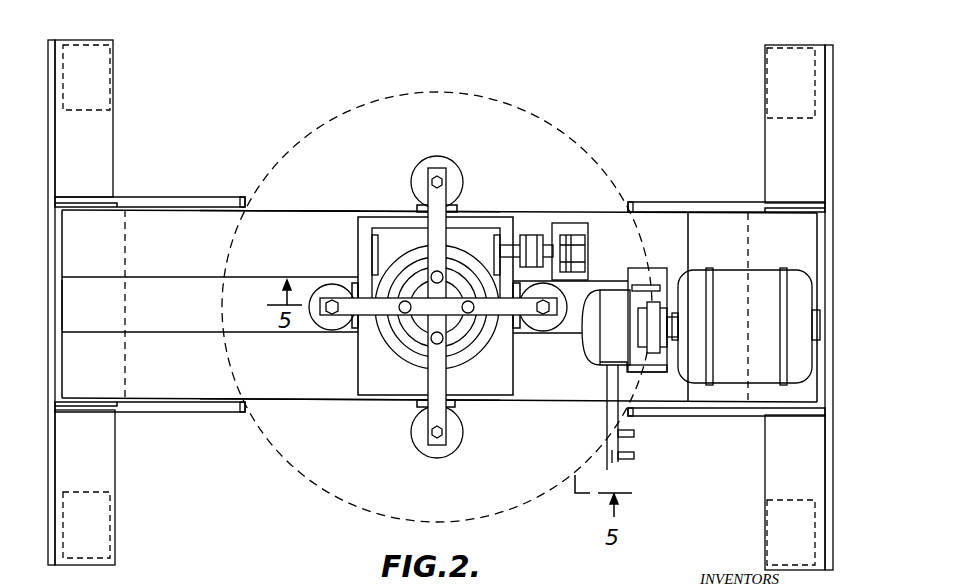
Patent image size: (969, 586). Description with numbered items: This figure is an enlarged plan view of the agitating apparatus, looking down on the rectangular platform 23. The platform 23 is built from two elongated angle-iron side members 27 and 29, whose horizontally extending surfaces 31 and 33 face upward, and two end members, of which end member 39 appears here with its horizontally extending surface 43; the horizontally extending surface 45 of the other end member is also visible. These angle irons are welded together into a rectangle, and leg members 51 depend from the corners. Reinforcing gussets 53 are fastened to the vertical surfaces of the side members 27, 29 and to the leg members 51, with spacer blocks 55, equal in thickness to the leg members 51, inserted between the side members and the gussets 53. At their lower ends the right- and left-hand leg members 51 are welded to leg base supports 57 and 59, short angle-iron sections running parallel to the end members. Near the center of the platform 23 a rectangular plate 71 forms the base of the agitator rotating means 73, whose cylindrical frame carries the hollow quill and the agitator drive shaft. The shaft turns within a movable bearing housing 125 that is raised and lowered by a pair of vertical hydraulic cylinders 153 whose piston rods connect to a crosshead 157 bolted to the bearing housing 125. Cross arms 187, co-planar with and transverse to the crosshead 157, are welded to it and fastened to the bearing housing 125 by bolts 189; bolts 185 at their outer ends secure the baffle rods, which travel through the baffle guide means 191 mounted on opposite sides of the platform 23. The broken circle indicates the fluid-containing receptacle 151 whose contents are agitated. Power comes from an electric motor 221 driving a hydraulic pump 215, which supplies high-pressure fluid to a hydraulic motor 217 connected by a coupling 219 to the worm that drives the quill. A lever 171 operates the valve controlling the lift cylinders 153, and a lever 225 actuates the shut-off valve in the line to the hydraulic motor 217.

The platform 23 is at (336, 206).
The side member 27 is at (321, 398).
The side member 29 is at (289, 210).
The horizontally extending surface 31 is at (250, 346).
The horizontally extending surface 33 is at (253, 261).
The end member 39 is at (126, 303).
The horizontally extending surface 43 is at (86, 312).
The horizontally extending surface 45 is at (814, 312).
The leg member 51 is at (110, 205).
The reinforcing gusset 53 is at (128, 197).
The spacer block 55 is at (245, 207).
The leg base support 57 is at (786, 139).
The leg base support 59 is at (97, 133).
The rectangular plate 71 is at (500, 394).
The agitator rotating means 73 is at (498, 357).
The bearing housing 125 is at (415, 328).
The fluid-containing receptacle 151 is at (308, 478).
The cylinder 153 is at (334, 290).
The crosshead 157 is at (372, 308).
The lever 171 is at (635, 434).
The bolt 185 is at (448, 178).
The cross arm 187 is at (435, 232).
The bolt 189 is at (441, 269).
The baffle guide means 191 is at (433, 152).
The hydraulic pump 215 is at (617, 298).
The hydraulic motor 217 is at (590, 233).
The coupling 219 is at (529, 235).
The electric motor 221 is at (733, 288).
The lever 225 is at (635, 459).